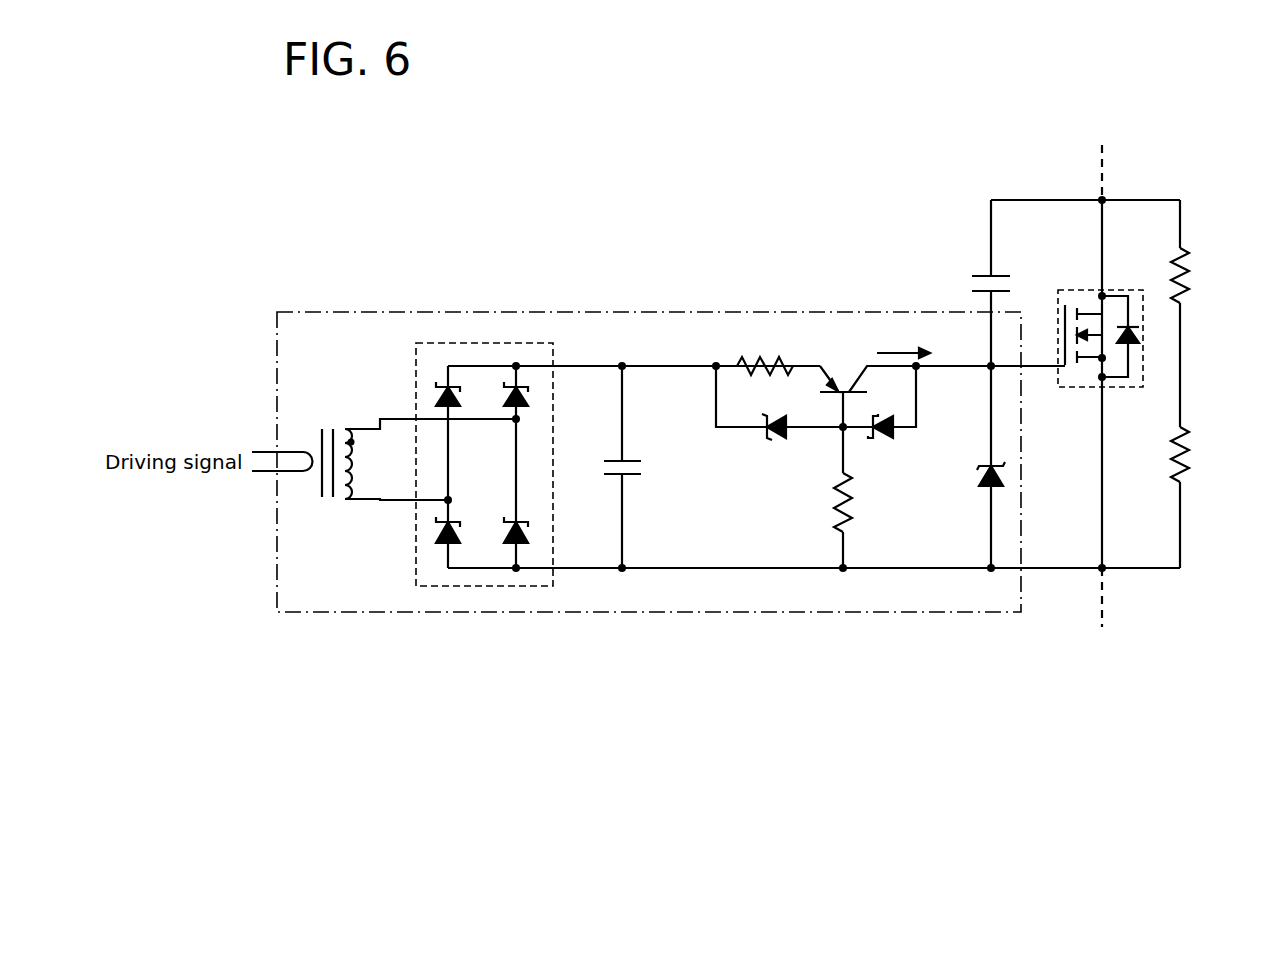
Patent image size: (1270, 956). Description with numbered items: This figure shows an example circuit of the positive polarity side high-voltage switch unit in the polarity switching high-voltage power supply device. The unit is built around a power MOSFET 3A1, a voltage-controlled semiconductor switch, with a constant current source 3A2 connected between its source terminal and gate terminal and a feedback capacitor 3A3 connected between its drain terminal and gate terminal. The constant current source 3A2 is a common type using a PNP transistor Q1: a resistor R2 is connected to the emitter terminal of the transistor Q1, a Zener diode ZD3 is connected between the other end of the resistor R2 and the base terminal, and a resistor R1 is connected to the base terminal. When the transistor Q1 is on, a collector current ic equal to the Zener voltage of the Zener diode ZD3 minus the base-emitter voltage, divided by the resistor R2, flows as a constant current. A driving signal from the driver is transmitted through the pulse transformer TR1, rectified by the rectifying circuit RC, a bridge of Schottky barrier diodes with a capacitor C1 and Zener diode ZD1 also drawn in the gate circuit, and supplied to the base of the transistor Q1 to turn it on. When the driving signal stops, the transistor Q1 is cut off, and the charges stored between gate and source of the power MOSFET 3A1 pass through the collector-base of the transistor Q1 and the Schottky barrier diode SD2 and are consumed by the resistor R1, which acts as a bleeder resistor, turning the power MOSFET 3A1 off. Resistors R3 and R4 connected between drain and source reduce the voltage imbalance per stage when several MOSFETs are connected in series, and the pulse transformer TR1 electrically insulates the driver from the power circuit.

The power MOSFET 3A1 is at (1130, 389).
The constant current source 3A2 is at (635, 312).
The feedback capacitor 3A3 is at (983, 273).
The rectifying circuit RC is at (414, 360).
The pulse transformer TR1 is at (406, 478).
The capacitor C1 is at (644, 467).
The resistor R1 is at (824, 499).
The resistor R2 is at (752, 348).
The resistor R3 is at (1203, 313).
The resistor R4 is at (1203, 497).
The transistor Q1 is at (942, 380).
The Zener diode ZD1 is at (966, 517).
The Zener diode ZD3 is at (781, 421).
The Schottky barrier diode SD2 is at (886, 420).
The collector current ic is at (903, 339).